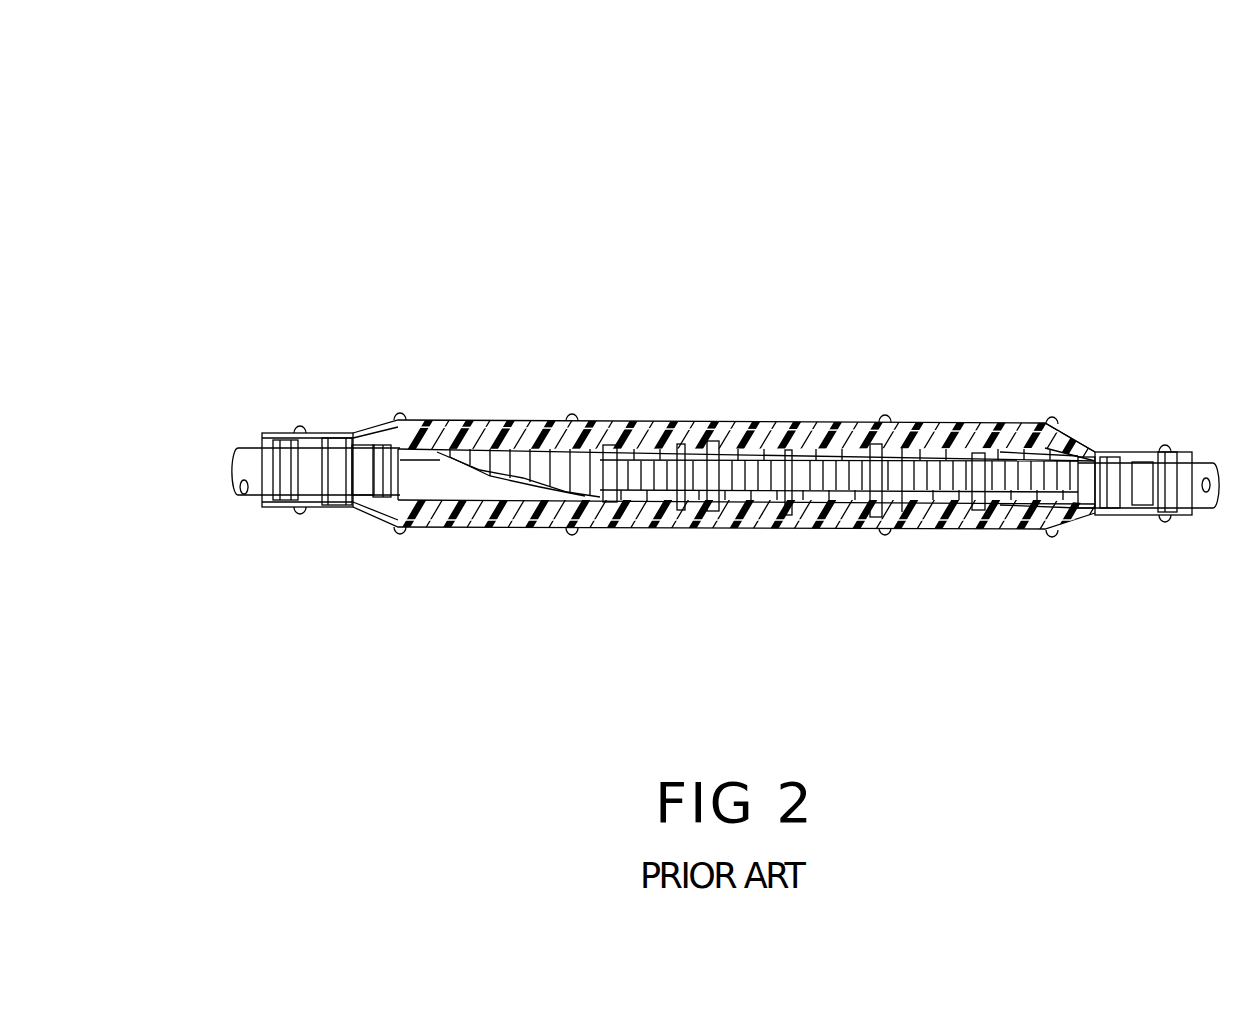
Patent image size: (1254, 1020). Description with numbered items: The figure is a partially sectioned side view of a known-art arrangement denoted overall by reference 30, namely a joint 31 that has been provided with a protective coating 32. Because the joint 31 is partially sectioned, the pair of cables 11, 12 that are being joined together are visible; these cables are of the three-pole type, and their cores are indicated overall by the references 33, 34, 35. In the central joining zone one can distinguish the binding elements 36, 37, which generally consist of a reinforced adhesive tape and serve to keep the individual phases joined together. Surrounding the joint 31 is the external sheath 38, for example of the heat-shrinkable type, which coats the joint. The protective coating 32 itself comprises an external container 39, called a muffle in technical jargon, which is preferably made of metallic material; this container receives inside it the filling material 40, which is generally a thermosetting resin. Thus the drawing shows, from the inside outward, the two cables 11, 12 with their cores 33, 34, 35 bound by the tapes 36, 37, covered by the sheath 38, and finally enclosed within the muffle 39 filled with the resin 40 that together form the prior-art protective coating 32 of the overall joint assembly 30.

The joint with protective coating 30 is at (673, 355).
The cable 11 is at (229, 414).
The cable 12 is at (1138, 445).
The protective coating 32 is at (668, 396).
The joint 31 is at (998, 437).
The core 33 is at (1067, 447).
The core 34 is at (1047, 483).
The core 35 is at (992, 510).
The binding element 36 is at (890, 510).
The binding element 37 is at (703, 499).
The external sheath 38 is at (333, 507).
The external container 39 is at (537, 418).
The filling material 40 is at (443, 417).